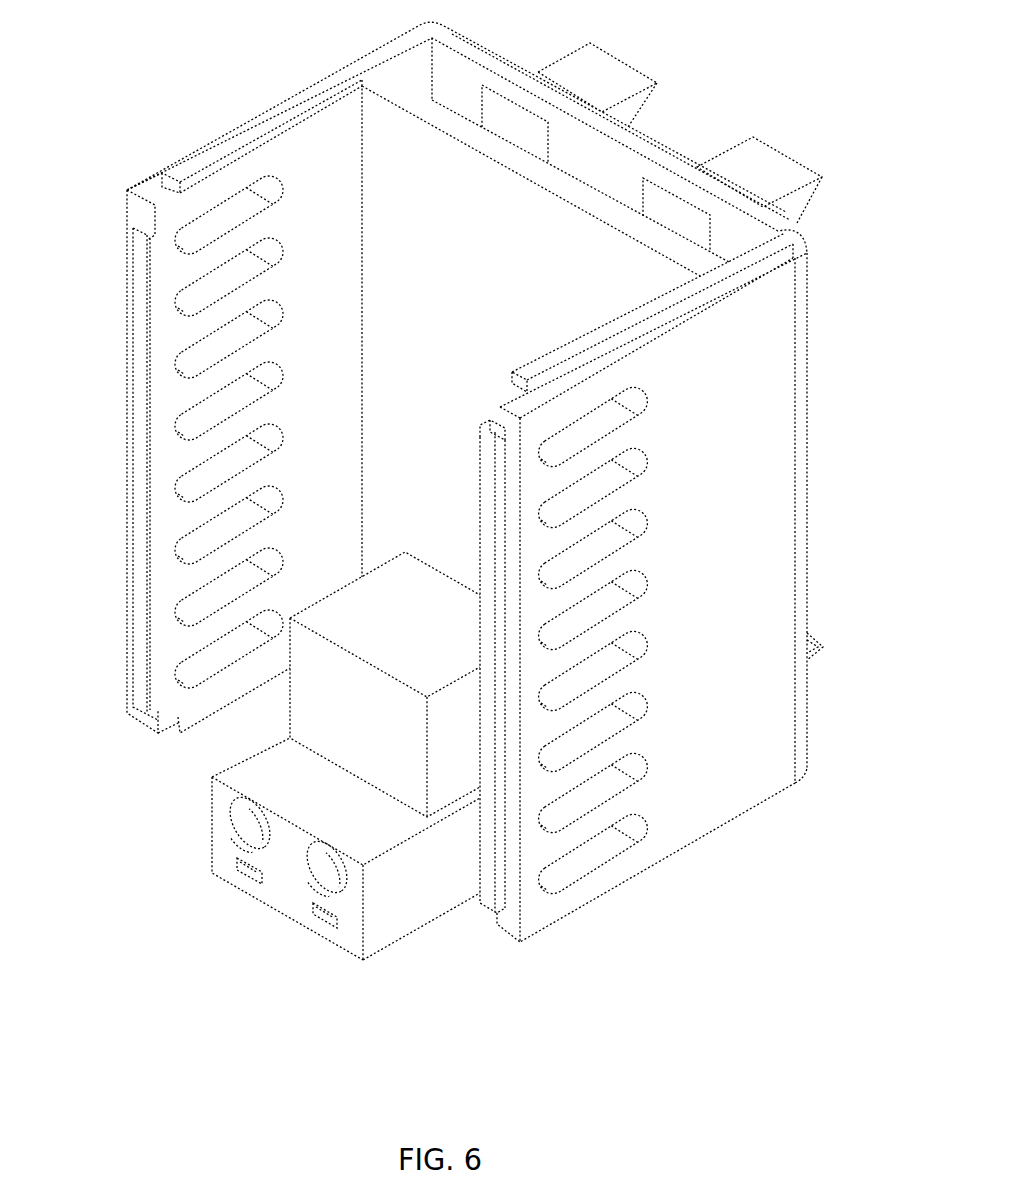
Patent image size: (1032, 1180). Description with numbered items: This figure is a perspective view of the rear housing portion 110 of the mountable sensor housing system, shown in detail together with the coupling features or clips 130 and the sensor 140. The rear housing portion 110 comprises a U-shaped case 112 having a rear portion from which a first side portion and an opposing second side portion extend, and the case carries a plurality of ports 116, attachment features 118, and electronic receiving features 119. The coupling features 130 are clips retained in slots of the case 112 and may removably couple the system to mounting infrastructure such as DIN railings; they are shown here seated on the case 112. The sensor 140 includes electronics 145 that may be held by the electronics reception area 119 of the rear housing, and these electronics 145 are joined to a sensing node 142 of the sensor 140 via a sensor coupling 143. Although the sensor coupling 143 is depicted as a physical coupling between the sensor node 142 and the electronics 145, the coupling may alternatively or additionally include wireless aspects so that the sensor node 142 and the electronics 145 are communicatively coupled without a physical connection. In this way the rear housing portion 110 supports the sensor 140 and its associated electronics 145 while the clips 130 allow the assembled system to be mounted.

The rear housing portion 110 is at (474, 500).
The U-shaped case 112 is at (474, 141).
The ports 116 is at (157, 328).
The attachment features 118 is at (770, 246).
The electronic receiving features 119 is at (335, 112).
The coupling features 130 is at (670, 36).
The sensor 140 is at (309, 859).
The sensing node 142 is at (385, 952).
The sensor coupling 143 is at (290, 705).
The electronics 145 is at (390, 90).